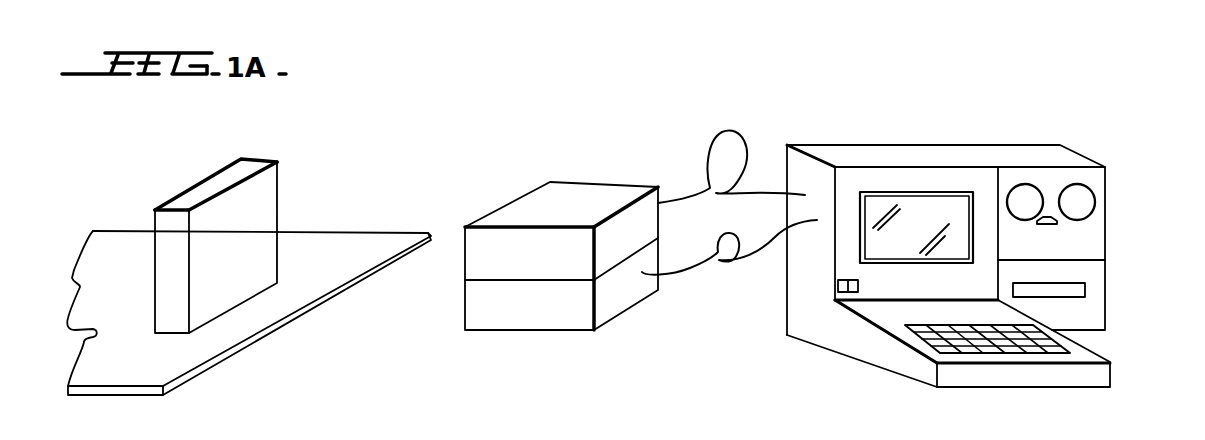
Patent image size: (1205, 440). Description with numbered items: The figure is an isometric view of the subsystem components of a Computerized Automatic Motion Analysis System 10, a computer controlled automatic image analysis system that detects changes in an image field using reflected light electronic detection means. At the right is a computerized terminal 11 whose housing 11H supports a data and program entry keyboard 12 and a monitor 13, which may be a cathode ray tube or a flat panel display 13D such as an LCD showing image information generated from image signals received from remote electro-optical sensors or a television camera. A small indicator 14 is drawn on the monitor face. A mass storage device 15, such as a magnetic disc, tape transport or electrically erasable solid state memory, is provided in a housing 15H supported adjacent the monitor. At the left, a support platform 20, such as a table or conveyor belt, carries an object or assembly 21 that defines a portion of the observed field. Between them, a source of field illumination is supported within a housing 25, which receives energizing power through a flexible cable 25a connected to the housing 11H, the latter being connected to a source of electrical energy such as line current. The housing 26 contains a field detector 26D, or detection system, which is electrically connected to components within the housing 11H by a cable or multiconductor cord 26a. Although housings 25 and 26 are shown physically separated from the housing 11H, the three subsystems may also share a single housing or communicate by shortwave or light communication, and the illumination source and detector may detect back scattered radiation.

The Computerized Automatic Motion Analysis System 10 is at (102, 208).
The support platform 20 is at (117, 398).
The object or assembly 21 is at (215, 173).
The illumination source housing 25 is at (532, 192).
The flexible cable 25a is at (727, 130).
The detector housing 26 is at (622, 308).
The cable or multiconductor cord 26a is at (717, 238).
The detector 26D is at (493, 313).
The computerized terminal 11 is at (932, 145).
The housing 11H is at (807, 340).
The data and program entry keyboard 12 is at (887, 308).
The monitor 13 is at (977, 180).
The flat panel display 13D is at (907, 210).
The indicator 14 is at (835, 283).
The mass storage device 15 is at (1108, 227).
The mass storage housing 15H is at (1100, 185).